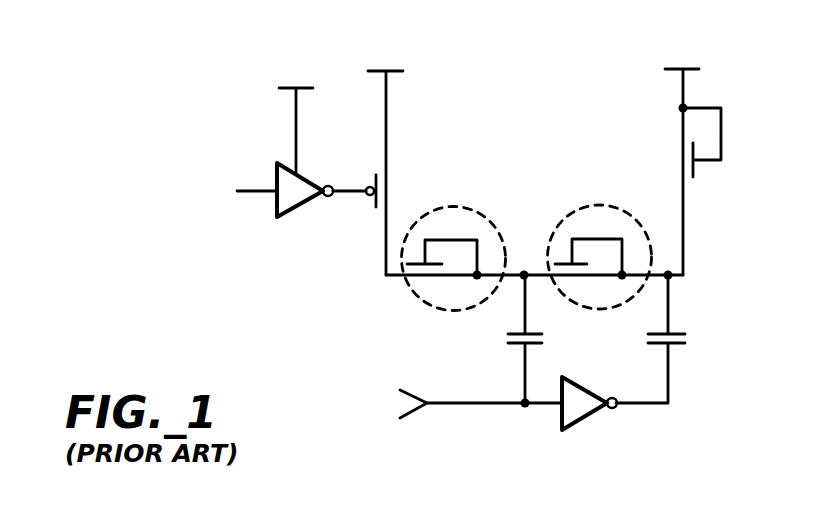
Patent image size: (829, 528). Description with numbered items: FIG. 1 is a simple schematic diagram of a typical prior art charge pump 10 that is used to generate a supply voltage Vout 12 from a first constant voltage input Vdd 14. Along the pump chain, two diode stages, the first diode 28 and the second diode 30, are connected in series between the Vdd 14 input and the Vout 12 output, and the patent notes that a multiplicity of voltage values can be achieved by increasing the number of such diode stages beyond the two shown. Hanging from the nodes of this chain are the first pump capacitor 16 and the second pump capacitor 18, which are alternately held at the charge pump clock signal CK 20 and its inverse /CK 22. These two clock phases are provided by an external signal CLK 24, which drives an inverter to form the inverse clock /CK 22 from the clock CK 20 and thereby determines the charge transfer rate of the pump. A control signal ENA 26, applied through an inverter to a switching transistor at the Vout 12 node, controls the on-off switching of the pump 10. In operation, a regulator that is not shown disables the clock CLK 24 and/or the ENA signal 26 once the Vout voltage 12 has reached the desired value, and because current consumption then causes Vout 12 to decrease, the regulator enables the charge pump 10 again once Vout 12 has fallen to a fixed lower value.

The charge pump 10 is at (302, 363).
The supply voltage Vout 12 is at (387, 42).
The constant voltage input Vdd 14 is at (683, 37).
The capacitor CP1 16 is at (515, 348).
The capacitor CP2 18 is at (673, 348).
The charge pump clock signal CK 20 is at (552, 410).
The inverse clock signal /CK 22 is at (627, 410).
The external signal CLK 24 is at (377, 423).
The control signal ENA 26 is at (192, 207).
The diode D1 28 is at (457, 217).
The diode D2 30 is at (600, 217).